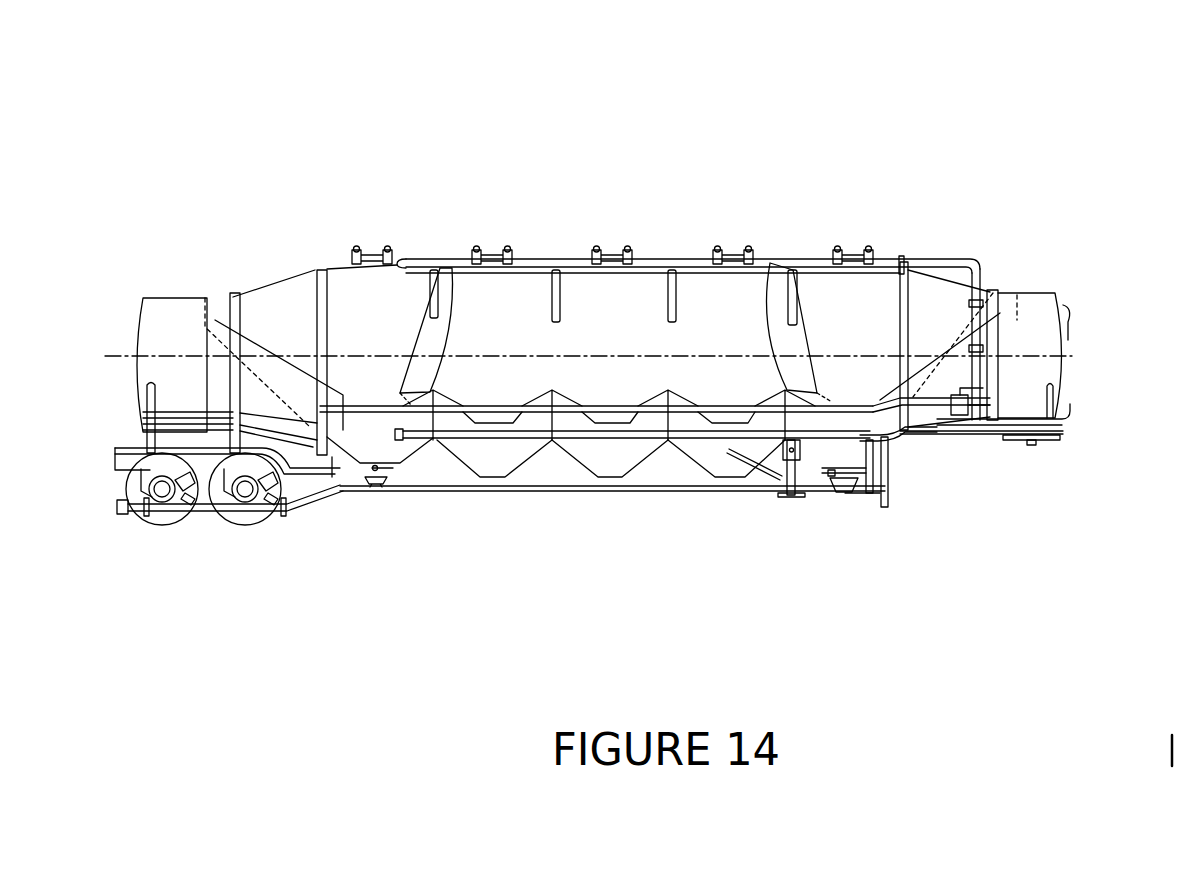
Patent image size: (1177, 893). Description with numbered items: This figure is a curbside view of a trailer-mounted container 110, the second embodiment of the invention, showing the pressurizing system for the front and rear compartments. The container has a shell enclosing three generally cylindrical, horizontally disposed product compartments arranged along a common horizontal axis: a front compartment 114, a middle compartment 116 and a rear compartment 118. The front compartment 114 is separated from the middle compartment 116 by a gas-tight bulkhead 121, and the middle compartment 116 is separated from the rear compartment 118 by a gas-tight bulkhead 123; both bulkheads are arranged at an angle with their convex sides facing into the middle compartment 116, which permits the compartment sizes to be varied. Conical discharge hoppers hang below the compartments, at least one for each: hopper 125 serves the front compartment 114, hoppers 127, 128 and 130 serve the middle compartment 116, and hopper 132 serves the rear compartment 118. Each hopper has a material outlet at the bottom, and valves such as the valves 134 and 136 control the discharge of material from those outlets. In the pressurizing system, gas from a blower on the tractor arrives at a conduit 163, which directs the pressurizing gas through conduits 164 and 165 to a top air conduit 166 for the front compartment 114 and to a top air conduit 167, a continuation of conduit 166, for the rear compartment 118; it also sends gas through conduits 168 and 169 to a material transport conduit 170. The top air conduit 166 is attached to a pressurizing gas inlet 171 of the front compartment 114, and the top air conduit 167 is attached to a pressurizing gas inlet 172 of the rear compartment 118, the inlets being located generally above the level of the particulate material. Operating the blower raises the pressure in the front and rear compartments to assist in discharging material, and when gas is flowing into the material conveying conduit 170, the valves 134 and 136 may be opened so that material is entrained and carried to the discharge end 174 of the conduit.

The trailer-mounted container 110 is at (706, 134).
The front compartment 114 is at (840, 295).
The middle compartment 116 is at (603, 302).
The rear compartment 118 is at (367, 280).
The gas-tight bulkhead 121 is at (470, 312).
The gas-tight bulkhead 123 is at (748, 330).
The conical discharge hopper 125 is at (828, 475).
The conical discharge hopper 127 is at (720, 450).
The conical discharge hopper 128 is at (600, 450).
The conical discharge hopper 130 is at (480, 452).
The conical discharge hopper 132 is at (370, 445).
The valve 134 is at (853, 513).
The valve 136 is at (380, 515).
The conduit 163 is at (1073, 430).
The conduit 164 is at (948, 430).
The conduit 165 is at (998, 262).
The top air conduit 166 is at (958, 255).
The top air conduit 167 is at (460, 260).
The conduit 168 is at (897, 440).
The conduit 169 is at (893, 507).
The material transport conduit 170 is at (610, 490).
The pressurizing gas inlet 171 is at (792, 283).
The pressurizing gas inlet 172 is at (392, 275).
The discharge end 174 is at (130, 526).